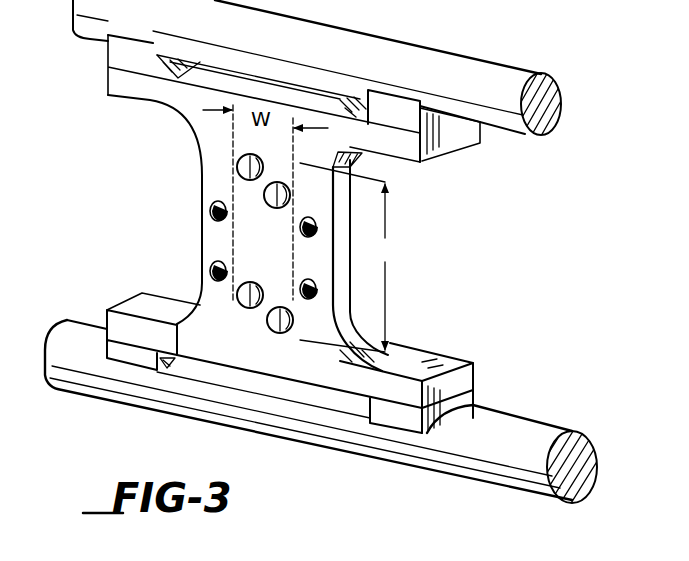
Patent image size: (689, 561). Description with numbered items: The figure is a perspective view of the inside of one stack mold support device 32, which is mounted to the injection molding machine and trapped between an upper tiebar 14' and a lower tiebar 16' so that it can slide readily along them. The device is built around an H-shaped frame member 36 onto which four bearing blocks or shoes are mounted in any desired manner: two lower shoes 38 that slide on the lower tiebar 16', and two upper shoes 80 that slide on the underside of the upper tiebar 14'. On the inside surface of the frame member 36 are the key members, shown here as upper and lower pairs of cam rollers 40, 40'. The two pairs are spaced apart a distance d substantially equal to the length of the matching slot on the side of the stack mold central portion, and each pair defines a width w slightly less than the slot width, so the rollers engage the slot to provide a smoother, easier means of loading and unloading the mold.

The upper tiebar 14' is at (323, 75).
The lower tiebar 16' is at (326, 427).
The stack mold support device 32 is at (400, 244).
The H-shaped frame member 36 is at (306, 368).
The lower shoe 38 is at (395, 418).
The upper cam rollers 40 is at (208, 181).
The lower cam rollers 40' is at (246, 318).
The upper shoe 80 is at (397, 107).